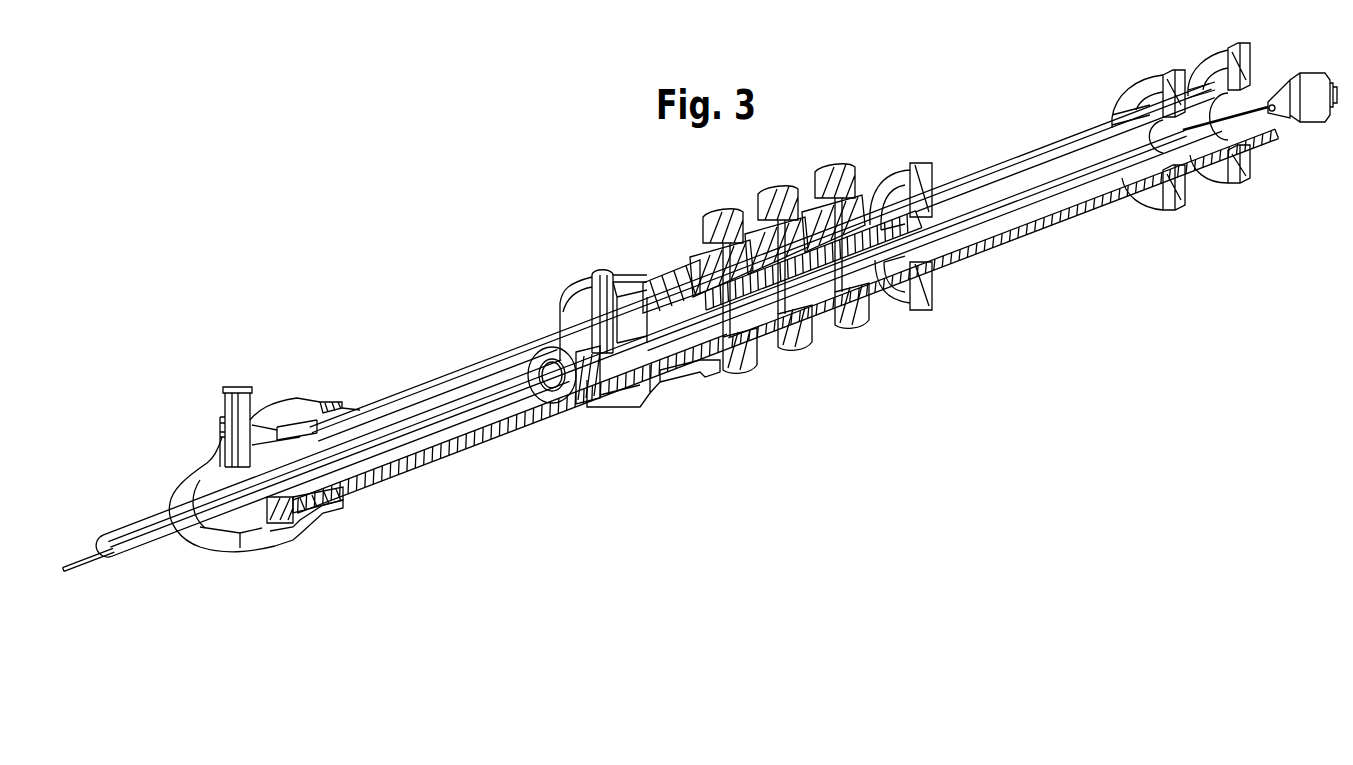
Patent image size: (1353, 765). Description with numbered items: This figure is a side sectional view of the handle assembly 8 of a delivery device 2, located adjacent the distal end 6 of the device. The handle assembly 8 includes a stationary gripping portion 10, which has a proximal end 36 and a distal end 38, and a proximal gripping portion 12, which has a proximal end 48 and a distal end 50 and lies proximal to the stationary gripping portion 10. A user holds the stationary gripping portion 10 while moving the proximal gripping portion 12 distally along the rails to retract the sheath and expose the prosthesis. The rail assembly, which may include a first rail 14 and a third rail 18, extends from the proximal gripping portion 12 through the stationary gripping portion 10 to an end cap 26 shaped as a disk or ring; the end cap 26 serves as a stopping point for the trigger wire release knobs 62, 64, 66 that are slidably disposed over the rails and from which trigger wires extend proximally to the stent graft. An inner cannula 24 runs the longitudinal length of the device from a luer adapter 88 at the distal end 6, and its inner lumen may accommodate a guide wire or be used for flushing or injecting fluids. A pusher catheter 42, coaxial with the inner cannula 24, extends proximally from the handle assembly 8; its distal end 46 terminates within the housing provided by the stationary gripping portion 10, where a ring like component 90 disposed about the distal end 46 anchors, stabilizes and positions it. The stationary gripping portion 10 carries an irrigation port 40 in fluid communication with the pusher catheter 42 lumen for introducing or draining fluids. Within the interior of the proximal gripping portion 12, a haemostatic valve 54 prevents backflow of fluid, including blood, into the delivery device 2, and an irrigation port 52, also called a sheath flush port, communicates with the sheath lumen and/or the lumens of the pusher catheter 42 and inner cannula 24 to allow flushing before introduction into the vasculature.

The delivery device 2 is at (878, 134).
The distal end 6 is at (1236, 47).
The handle assembly 8 is at (680, 268).
The stationary gripping portion 10 is at (648, 408).
The proximal gripping portion 12 is at (280, 550).
The first rail 14 is at (467, 366).
The third rail 18 is at (409, 478).
The inner cannula 24 is at (1214, 170).
The end cap 26 is at (910, 164).
The proximal end 36 is at (550, 332).
The distal end 38 is at (692, 380).
The irrigation port 40 is at (606, 268).
The pusher catheter 42 is at (400, 420).
The distal end 46 is at (566, 400).
The proximal end 48 is at (180, 486).
The distal end 50 is at (341, 399).
The irrigation port 52 is at (236, 390).
The haemostatic valve 54 is at (248, 555).
The trigger wire release knob 62 is at (864, 322).
The trigger wire release knob 64 is at (800, 336).
The trigger wire release knob 66 is at (740, 357).
The luer adapter 88 is at (1296, 120).
The ring like component 90 is at (584, 392).